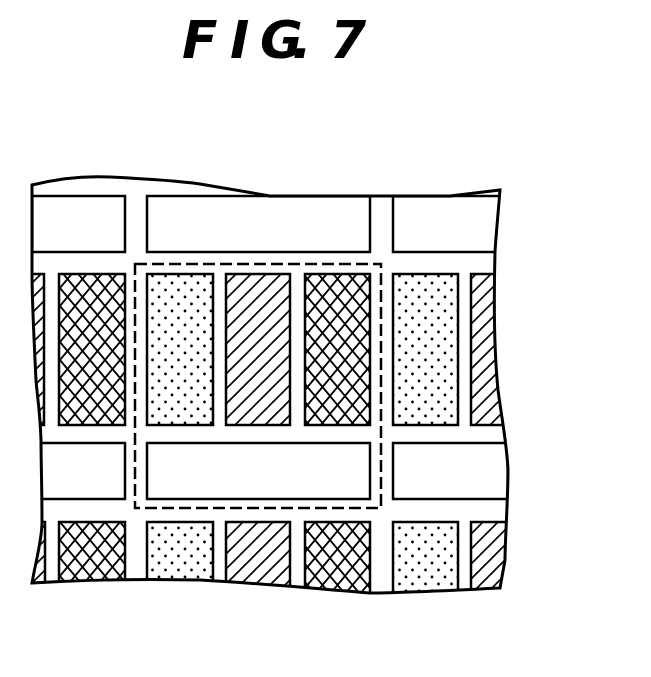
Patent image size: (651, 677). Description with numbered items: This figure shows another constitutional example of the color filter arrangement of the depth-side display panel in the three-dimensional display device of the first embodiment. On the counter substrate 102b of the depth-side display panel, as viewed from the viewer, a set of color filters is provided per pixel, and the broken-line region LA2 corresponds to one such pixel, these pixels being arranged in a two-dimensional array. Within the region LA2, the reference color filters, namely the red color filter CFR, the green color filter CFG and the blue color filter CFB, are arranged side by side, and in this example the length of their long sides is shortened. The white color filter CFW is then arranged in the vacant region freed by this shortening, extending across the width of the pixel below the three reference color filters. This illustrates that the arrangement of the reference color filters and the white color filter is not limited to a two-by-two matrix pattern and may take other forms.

The red color filter CFR is at (180, 308).
The green color filter CFG is at (262, 317).
The blue color filter CFB is at (338, 313).
The white color filter CFW is at (261, 468).
The region surrounded by a broken line LA2 is at (377, 263).
The counter substrate 102b is at (475, 223).